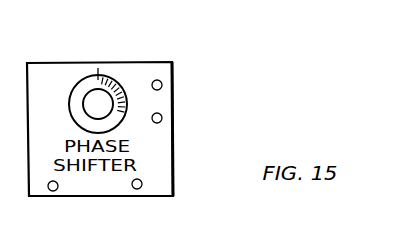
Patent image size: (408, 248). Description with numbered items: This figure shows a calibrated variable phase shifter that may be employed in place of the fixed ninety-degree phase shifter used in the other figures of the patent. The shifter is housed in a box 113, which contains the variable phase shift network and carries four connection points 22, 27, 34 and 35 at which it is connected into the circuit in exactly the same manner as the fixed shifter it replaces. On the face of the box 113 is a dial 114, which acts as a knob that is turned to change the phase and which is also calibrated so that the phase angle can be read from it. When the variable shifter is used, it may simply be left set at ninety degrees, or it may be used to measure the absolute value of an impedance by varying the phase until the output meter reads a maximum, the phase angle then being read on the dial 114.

The box 113 is at (143, 70).
The dial 114 is at (92, 100).
The connection point 34 is at (162, 85).
The connection point 35 is at (162, 118).
The connection point 27 is at (57, 190).
The connection point 22 is at (141, 188).